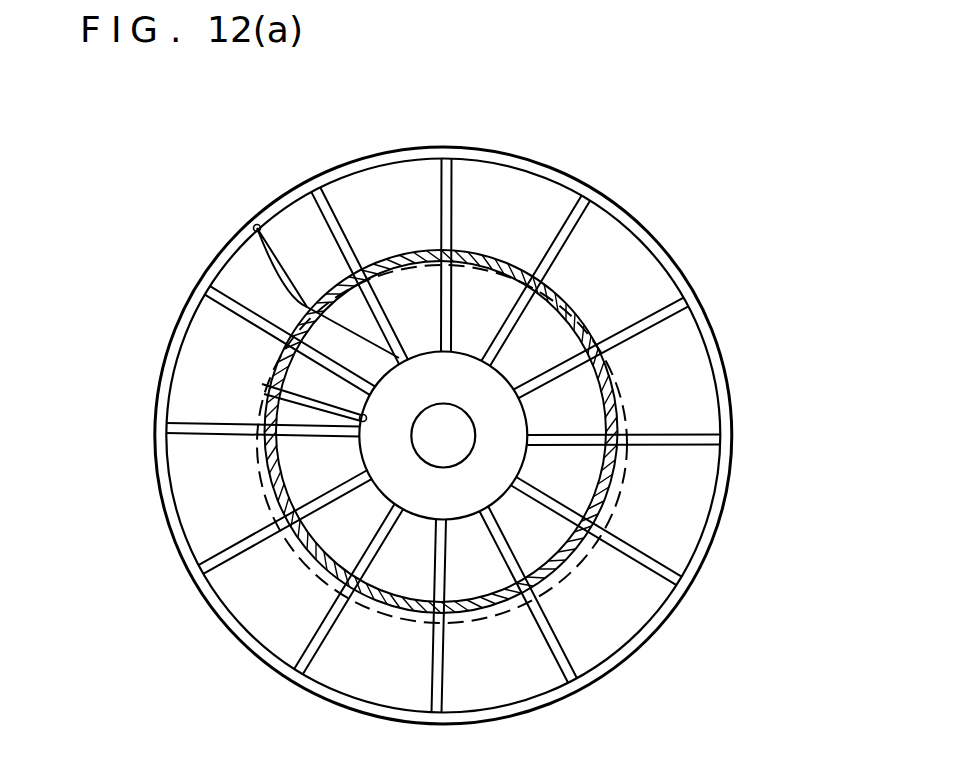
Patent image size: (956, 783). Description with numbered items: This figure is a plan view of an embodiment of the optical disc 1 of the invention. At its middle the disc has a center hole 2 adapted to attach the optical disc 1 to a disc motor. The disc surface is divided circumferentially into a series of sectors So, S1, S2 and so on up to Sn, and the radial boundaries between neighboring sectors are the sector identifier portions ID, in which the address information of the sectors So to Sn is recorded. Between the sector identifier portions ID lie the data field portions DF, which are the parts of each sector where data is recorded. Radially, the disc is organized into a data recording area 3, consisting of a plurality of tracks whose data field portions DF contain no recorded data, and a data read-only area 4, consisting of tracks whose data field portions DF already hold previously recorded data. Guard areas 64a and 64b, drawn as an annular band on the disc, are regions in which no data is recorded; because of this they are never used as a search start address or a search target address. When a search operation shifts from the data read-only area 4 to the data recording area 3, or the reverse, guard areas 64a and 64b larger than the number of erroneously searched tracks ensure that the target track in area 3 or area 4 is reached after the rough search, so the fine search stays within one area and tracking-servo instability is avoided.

The optical disc 1 is at (370, 150).
The center hole 2 is at (442, 403).
The data recording area 3 is at (254, 227).
The data read-only area 4 is at (262, 385).
The guard area 64a is at (321, 570).
The guard area 64b is at (383, 612).
The sector identifier portion ID is at (446, 158).
The data field portion DF is at (516, 188).
The sector Sn is at (389, 220).
The sector So is at (505, 218).
The sector S1 is at (608, 279).
The sector S2 is at (669, 391).